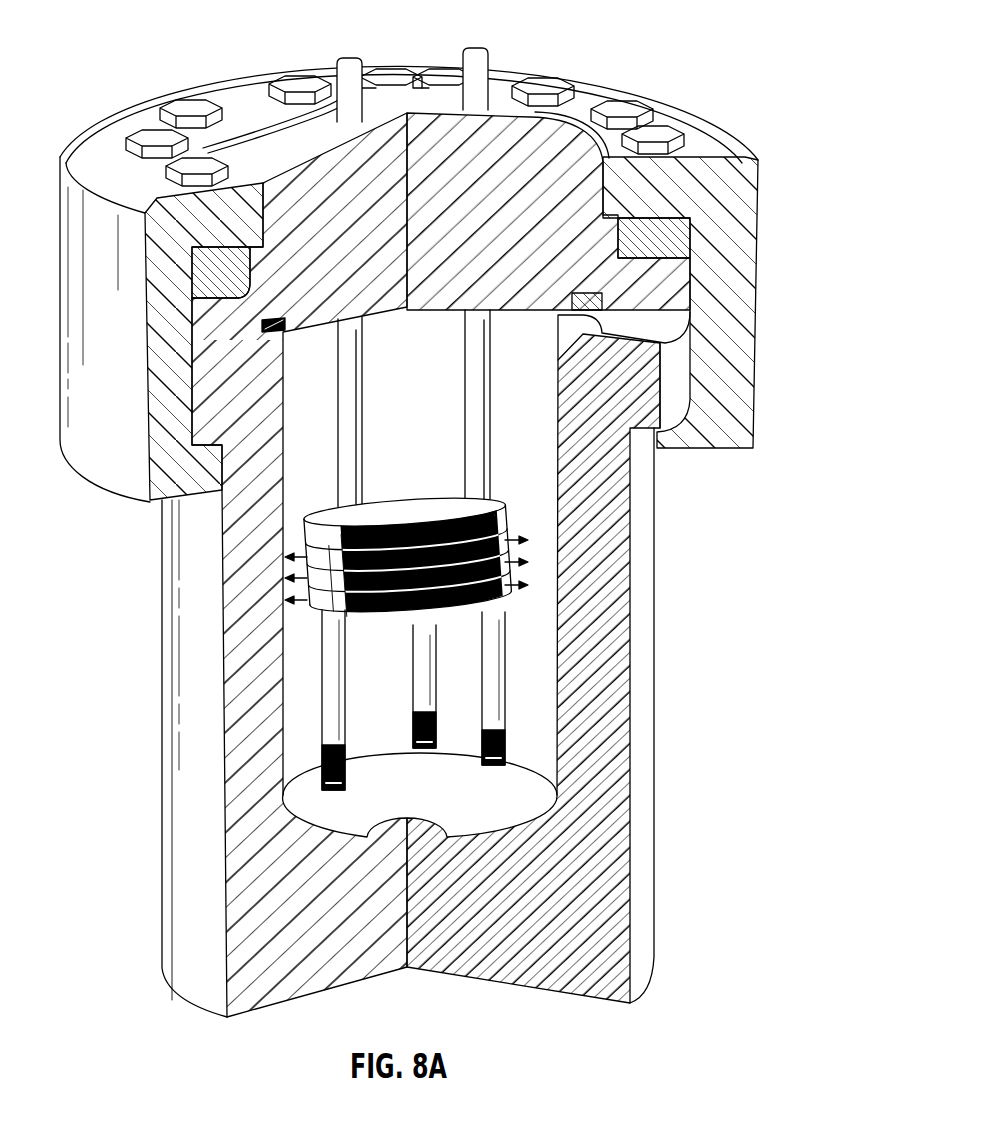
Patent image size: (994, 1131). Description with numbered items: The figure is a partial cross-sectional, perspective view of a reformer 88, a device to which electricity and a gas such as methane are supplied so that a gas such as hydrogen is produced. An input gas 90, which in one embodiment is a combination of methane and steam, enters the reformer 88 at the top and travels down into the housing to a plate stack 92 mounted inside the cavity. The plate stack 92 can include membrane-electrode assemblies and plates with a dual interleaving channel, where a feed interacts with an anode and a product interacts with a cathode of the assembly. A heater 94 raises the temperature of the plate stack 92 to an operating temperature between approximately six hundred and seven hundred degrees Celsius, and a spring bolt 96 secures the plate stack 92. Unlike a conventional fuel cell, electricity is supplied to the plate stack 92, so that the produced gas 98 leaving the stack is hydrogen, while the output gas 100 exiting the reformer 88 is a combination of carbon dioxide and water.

The reformer 88 is at (437, 513).
The input gas 90 is at (346, 46).
The output gas 100 is at (472, 36).
The plate stack 92 is at (382, 512).
The heater 94 is at (482, 607).
The spring bolt 96 is at (490, 693).
The produced gas 98 is at (512, 562).